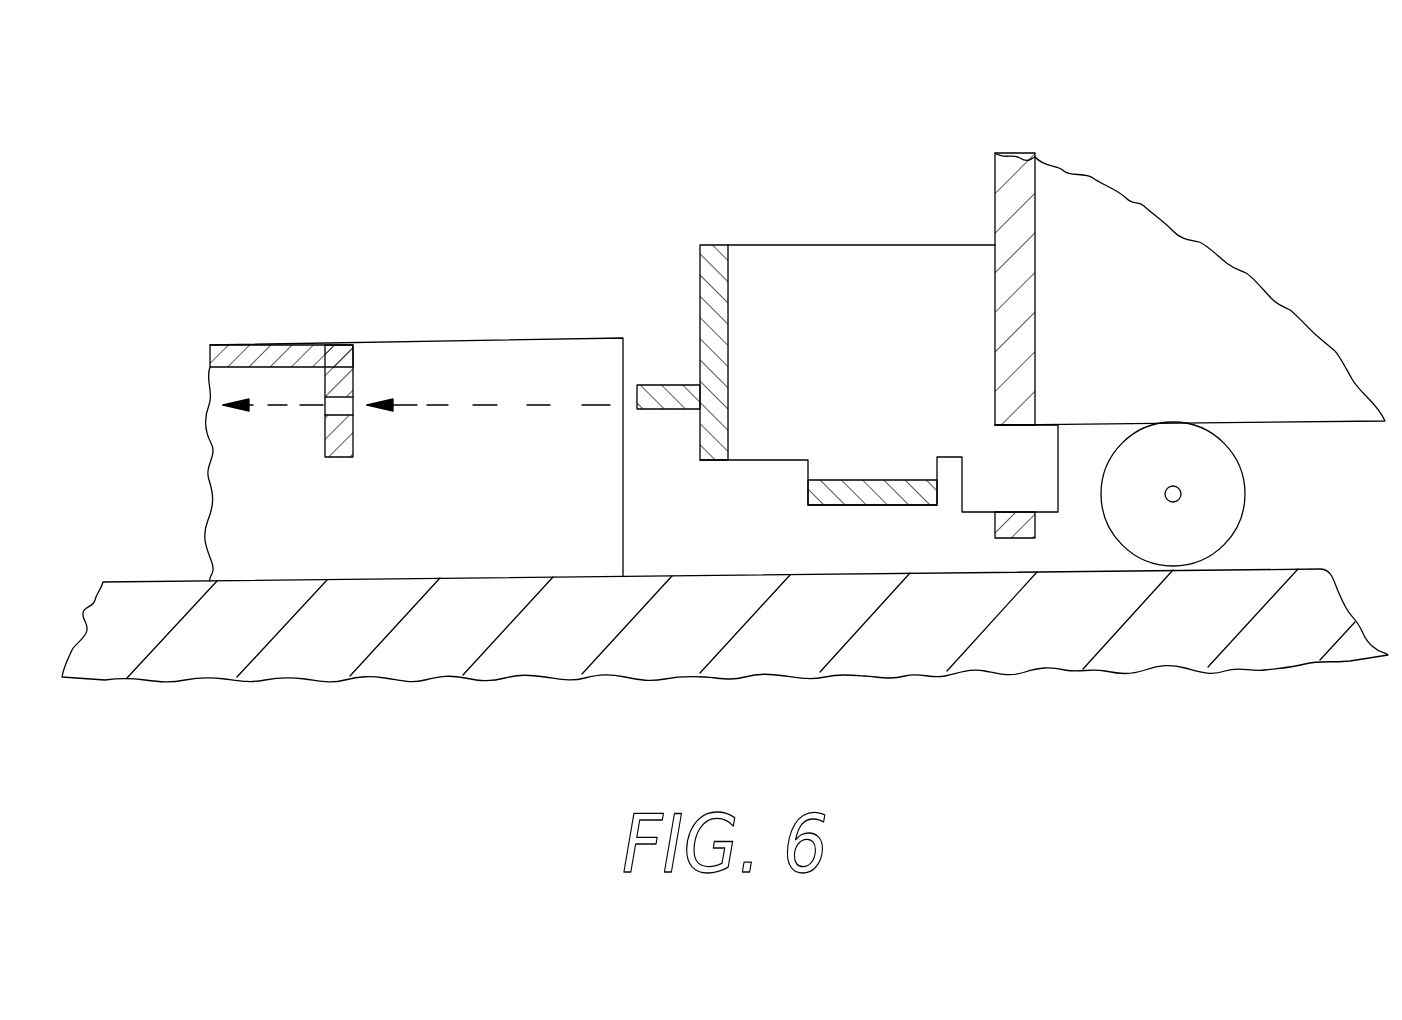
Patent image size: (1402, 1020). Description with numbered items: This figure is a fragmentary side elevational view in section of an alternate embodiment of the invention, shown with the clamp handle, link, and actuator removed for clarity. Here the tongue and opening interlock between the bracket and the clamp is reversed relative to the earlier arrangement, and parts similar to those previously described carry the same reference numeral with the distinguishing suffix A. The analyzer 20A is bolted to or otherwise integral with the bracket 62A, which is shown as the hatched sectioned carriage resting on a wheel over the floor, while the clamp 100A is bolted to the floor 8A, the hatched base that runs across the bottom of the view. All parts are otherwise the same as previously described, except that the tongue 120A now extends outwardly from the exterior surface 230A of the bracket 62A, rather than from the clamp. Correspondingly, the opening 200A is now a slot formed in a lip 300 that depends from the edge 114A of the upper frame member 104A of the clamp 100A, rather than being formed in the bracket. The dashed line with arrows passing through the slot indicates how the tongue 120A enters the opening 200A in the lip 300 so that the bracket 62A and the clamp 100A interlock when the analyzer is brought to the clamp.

The floor 8A is at (145, 580).
The clamp 100A is at (414, 345).
The upper frame member 104A is at (530, 527).
The edge 114A is at (347, 341).
The opening 200A is at (327, 390).
The lip 300 is at (325, 443).
The bracket 62A is at (1007, 289).
The exterior surface 230A is at (695, 256).
The tongue 120A is at (670, 410).
The analyzer 20A is at (1133, 253).